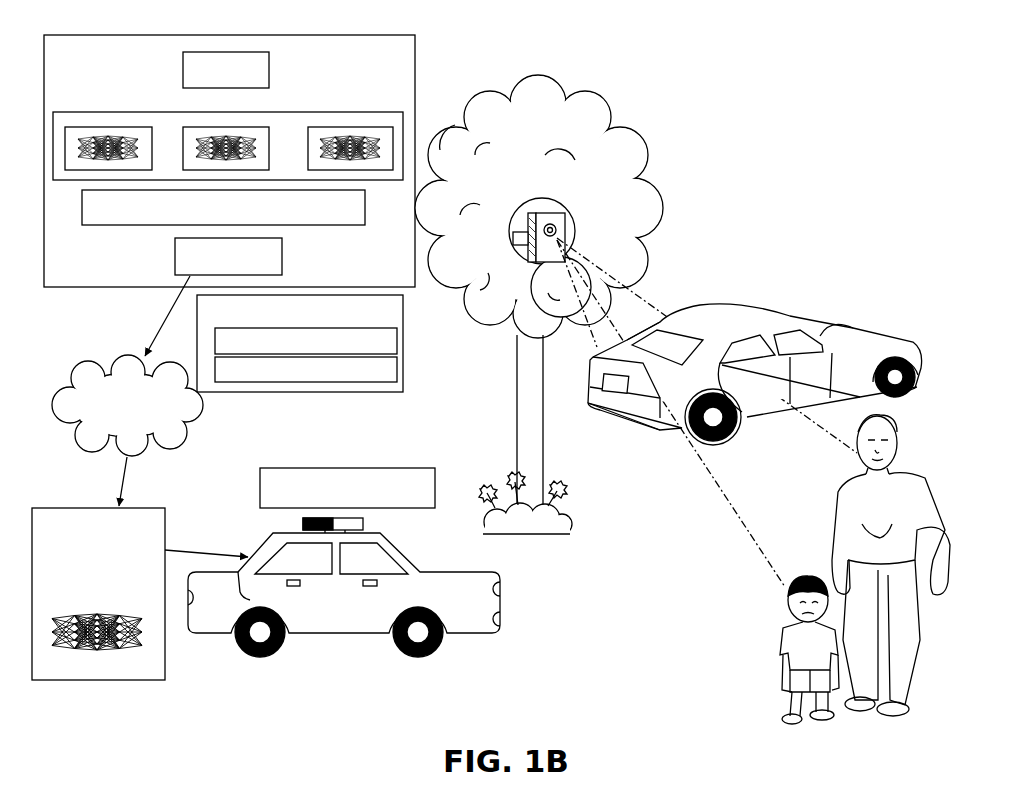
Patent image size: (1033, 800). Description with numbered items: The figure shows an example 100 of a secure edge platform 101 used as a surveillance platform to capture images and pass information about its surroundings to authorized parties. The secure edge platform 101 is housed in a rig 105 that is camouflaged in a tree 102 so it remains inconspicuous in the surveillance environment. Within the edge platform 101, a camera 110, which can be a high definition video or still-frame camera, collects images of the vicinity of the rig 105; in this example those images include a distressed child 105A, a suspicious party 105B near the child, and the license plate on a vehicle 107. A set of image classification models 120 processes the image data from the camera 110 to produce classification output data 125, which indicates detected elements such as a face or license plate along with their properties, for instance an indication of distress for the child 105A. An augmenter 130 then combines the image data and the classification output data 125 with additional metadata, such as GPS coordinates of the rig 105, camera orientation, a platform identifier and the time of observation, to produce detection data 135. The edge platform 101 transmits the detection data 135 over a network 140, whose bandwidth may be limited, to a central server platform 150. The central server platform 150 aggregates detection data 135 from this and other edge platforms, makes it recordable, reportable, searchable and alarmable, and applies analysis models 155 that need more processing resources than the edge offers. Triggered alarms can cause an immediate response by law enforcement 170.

The example 100 is at (797, 81).
The secure edge platform 101 is at (417, 74).
The tree 102 is at (607, 116).
The rig 105 is at (572, 210).
The distressed child 105A is at (765, 649).
The suspicious party 105B is at (828, 496).
The vehicle 107 is at (848, 317).
The camera 110 is at (181, 75).
The image classification models 120 is at (145, 111).
The classification output data 125 is at (335, 227).
The augmenter 130 is at (173, 267).
The detection data 135 is at (368, 394).
The network 140 is at (127, 391).
The central server platform 150 is at (72, 506).
The analysis models 155 is at (130, 645).
The law enforcement 170 is at (503, 585).